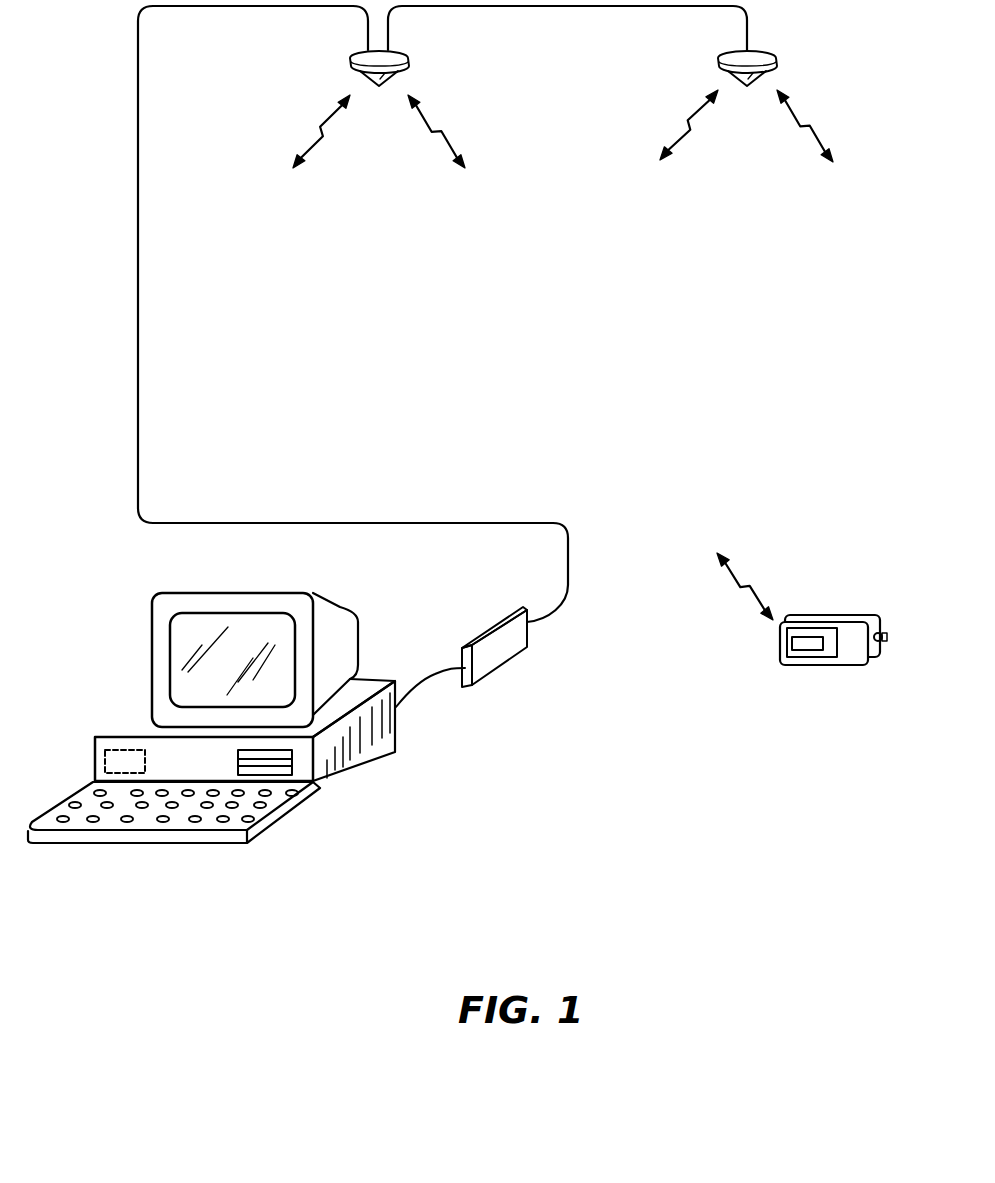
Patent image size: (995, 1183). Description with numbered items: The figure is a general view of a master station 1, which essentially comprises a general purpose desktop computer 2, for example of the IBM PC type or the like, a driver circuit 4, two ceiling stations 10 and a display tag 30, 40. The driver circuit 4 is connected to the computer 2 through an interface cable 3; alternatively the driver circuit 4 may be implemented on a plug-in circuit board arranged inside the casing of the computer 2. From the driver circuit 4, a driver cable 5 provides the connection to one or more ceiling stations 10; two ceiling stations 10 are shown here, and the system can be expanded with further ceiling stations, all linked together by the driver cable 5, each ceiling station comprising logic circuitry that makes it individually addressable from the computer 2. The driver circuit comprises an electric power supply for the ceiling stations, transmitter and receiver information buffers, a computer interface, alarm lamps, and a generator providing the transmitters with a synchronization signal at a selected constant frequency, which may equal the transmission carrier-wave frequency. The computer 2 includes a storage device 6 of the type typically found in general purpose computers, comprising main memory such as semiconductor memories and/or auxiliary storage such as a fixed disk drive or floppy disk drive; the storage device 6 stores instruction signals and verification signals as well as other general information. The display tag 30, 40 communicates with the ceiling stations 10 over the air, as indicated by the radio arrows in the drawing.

The master station 1 is at (531, 346).
The general purpose desktop computer 2 is at (211, 718).
The interface cable 3 is at (435, 668).
The driver circuit 4 is at (497, 612).
The driver cable 5 is at (388, 523).
The storage device 6 is at (95, 760).
The ceiling station 10 is at (408, 60).
The display tag 30 is at (802, 646).
The display tag 40 is at (847, 657).